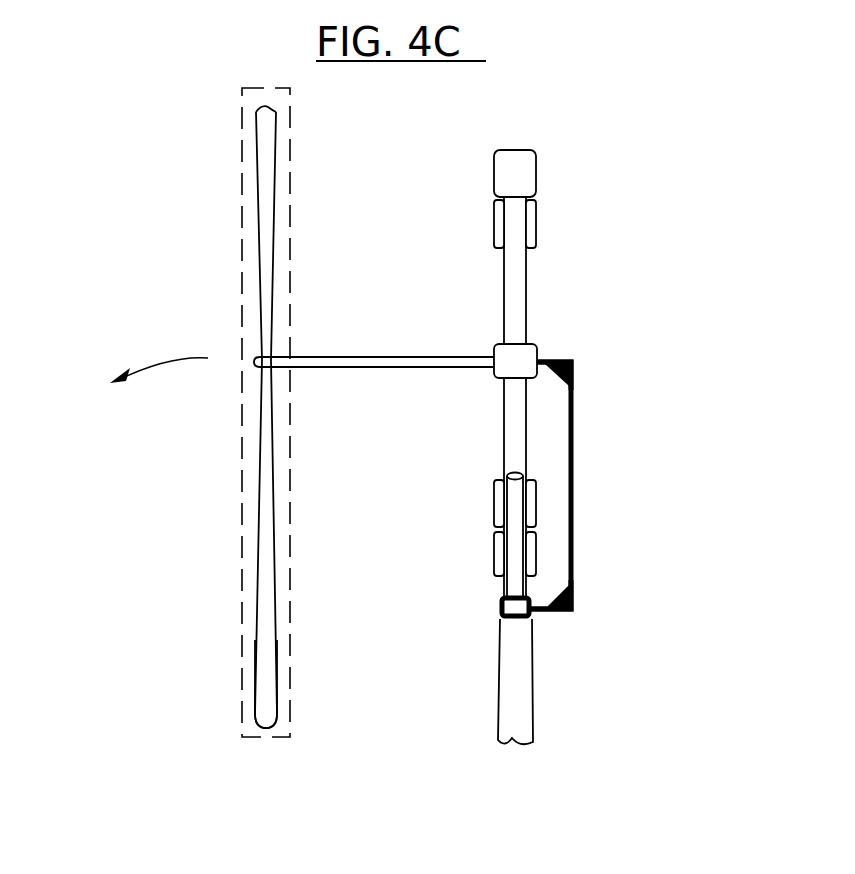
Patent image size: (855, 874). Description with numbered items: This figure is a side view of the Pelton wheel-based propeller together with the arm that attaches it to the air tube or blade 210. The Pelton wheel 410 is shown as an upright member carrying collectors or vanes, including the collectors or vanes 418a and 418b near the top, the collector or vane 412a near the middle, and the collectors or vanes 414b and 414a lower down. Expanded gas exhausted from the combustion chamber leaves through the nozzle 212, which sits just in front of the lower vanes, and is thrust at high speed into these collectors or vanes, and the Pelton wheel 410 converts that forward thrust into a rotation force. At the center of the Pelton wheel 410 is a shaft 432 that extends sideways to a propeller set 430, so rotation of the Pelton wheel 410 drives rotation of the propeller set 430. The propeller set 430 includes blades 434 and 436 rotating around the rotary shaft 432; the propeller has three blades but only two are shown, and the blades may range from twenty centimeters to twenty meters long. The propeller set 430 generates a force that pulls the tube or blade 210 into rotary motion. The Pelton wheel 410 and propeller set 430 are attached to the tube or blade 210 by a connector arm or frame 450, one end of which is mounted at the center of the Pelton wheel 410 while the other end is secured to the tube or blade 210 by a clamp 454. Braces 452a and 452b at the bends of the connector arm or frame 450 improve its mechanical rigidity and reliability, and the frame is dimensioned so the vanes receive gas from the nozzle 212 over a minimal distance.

The propeller set 430 is at (240, 473).
The blade 434 is at (258, 228).
The blade 436 is at (258, 560).
The shaft 432 is at (335, 366).
The Pelton wheel 410 is at (527, 298).
The collector or vane 418a is at (494, 186).
The collector or vane 418b is at (494, 224).
The collector or vane 412a is at (494, 348).
The connector arm or frame 450 is at (574, 483).
The brace 452a is at (574, 365).
The brace 452b is at (574, 603).
The nozzle 212 is at (510, 470).
The collector or vane 414b is at (494, 500).
The collector or vane 414a is at (494, 565).
The clamp 454 is at (500, 617).
The air tube or blade 210 is at (533, 635).